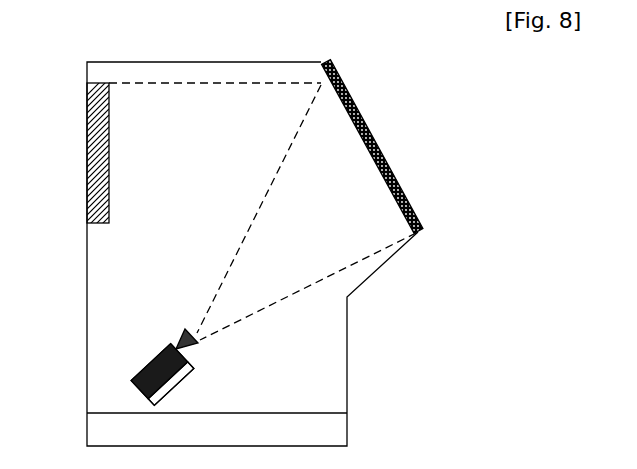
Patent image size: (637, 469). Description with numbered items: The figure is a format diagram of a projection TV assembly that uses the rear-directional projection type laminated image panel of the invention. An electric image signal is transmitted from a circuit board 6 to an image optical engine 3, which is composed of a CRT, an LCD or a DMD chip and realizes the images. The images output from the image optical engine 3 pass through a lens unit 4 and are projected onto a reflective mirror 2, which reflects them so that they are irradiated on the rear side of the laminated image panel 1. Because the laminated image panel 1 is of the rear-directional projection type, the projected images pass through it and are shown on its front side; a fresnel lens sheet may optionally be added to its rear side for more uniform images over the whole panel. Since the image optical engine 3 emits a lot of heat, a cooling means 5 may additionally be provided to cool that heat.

The laminated image panel 1 is at (97, 157).
The reflective mirror 2 is at (370, 135).
The image optical engine 3 is at (158, 355).
The lens unit 4 is at (180, 342).
The cooling means 5 is at (183, 377).
The circuit board 6 is at (338, 433).